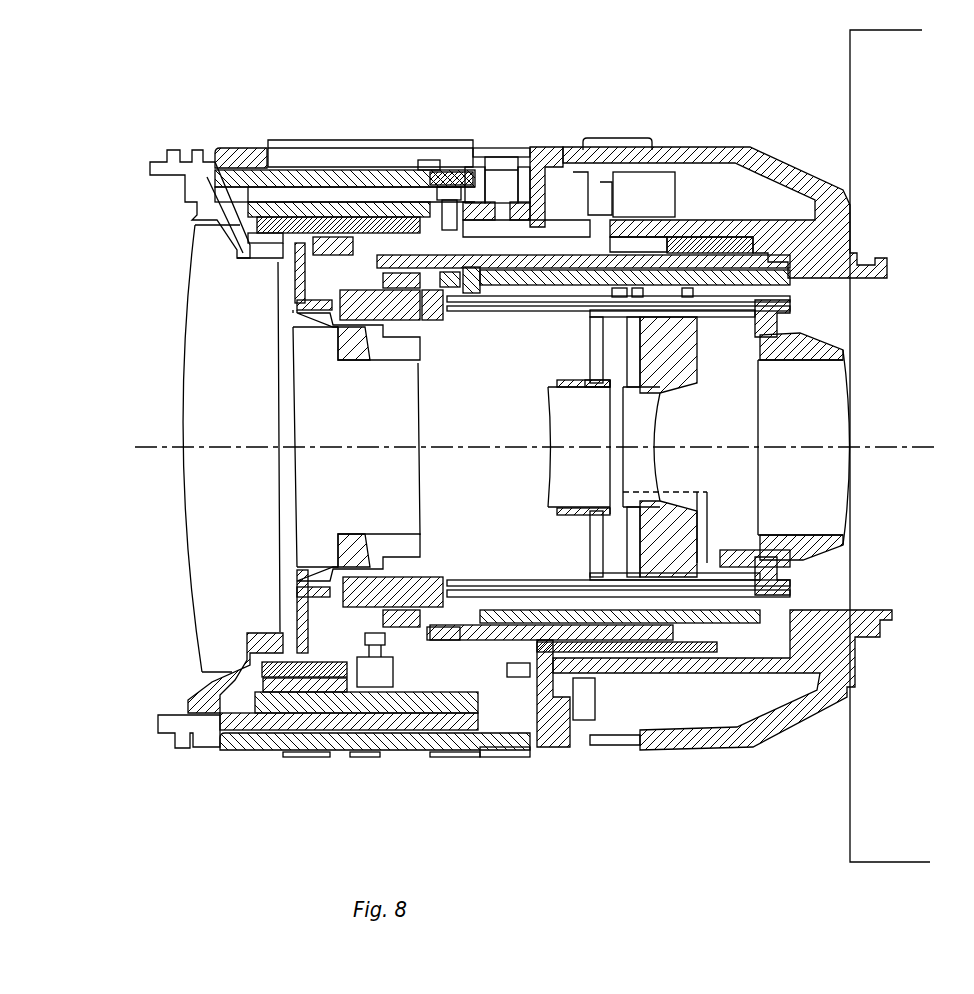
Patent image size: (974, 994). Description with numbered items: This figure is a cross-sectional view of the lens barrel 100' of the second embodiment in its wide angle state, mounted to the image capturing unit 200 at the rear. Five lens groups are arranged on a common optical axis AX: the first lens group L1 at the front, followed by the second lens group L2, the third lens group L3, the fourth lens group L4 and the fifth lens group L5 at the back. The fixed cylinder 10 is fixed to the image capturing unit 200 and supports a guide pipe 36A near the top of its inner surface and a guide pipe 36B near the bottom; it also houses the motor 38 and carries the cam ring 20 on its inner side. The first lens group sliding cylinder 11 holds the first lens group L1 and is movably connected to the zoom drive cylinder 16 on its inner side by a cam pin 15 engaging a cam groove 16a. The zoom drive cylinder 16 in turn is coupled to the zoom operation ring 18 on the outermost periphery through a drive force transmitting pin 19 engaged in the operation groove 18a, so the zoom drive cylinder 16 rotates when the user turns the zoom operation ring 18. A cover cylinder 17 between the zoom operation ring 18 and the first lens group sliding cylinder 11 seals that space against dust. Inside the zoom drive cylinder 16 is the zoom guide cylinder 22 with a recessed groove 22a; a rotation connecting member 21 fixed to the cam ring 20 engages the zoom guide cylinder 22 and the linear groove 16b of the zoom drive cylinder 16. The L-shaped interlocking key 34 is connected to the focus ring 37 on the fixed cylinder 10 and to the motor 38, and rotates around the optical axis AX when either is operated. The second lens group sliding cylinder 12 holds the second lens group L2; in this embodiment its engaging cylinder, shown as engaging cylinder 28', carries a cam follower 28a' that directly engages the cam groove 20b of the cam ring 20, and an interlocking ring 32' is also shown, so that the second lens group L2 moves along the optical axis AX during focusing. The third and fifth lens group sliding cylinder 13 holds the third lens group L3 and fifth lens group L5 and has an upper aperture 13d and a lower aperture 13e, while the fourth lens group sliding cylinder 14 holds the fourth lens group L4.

The lens barrel 100' is at (111, 76).
The first lens group sliding cylinder 11 is at (180, 196).
The cover cylinder 17 is at (240, 147).
The operation groove 18a is at (268, 147).
The zoom operation ring 18 is at (332, 140).
The zoom drive cylinder 16 is at (368, 202).
The cam groove 16a is at (435, 170).
The cam pin 15 is at (447, 172).
The drive force transmitting pin 19 is at (510, 157).
The interlocking key 34 is at (540, 147).
The focus ring 37 is at (630, 138).
The fixed cylinder 10 is at (733, 147).
The motor 38 is at (677, 193).
The image capturing unit 200 is at (846, 77).
The cam ring 20 is at (772, 277).
The guide pipe 36A is at (513, 313).
The lens frame 28' is at (232, 279).
The retaining ring 32' is at (207, 265).
The lens frame flange 28a' is at (407, 336).
The cam groove 20b is at (423, 320).
The second lens group sliding cylinder 12 is at (393, 555).
The first lens group L1 is at (173, 408).
The second lens group L2 is at (430, 418).
The fourth lens group sliding cylinder 14 is at (697, 370).
The third lens group L3 is at (550, 480).
The third and fifth lens group sliding cylinder 13 is at (555, 515).
The fourth lens group L4 is at (660, 427).
The lower aperture 13e is at (707, 493).
The upper aperture 13d is at (800, 333).
The fifth lens group L5 is at (852, 495).
The optical axis AX is at (897, 443).
The guide pipe 36B is at (555, 580).
The zoom guide cylinder 22 is at (260, 670).
The rotation connecting member 21 is at (387, 687).
The recessed groove 22a is at (520, 670).
The linear groove 16b is at (522, 670).